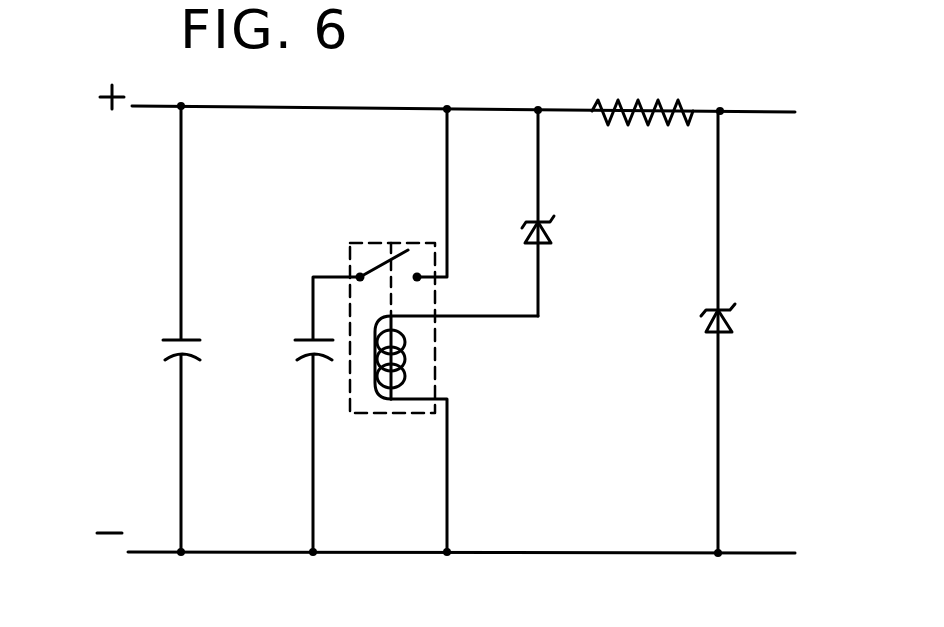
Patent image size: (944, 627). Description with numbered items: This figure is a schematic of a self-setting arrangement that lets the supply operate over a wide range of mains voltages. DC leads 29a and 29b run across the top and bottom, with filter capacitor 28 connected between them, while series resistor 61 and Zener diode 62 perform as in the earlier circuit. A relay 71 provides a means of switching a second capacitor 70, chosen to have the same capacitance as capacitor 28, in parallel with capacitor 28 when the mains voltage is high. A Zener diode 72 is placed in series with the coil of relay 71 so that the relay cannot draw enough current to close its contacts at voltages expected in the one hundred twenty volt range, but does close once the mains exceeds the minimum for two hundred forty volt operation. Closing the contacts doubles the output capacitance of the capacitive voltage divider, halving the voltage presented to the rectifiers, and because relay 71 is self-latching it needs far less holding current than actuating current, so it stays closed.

The filter capacitor 28 is at (170, 338).
The DC lead 29a is at (300, 106).
The DC lead 29b is at (280, 553).
The series resistor 61 is at (640, 105).
The Zener diode 62 is at (735, 308).
The capacitor 70 is at (306, 338).
The relay 71 is at (437, 372).
The Zener diode 72 is at (552, 222).